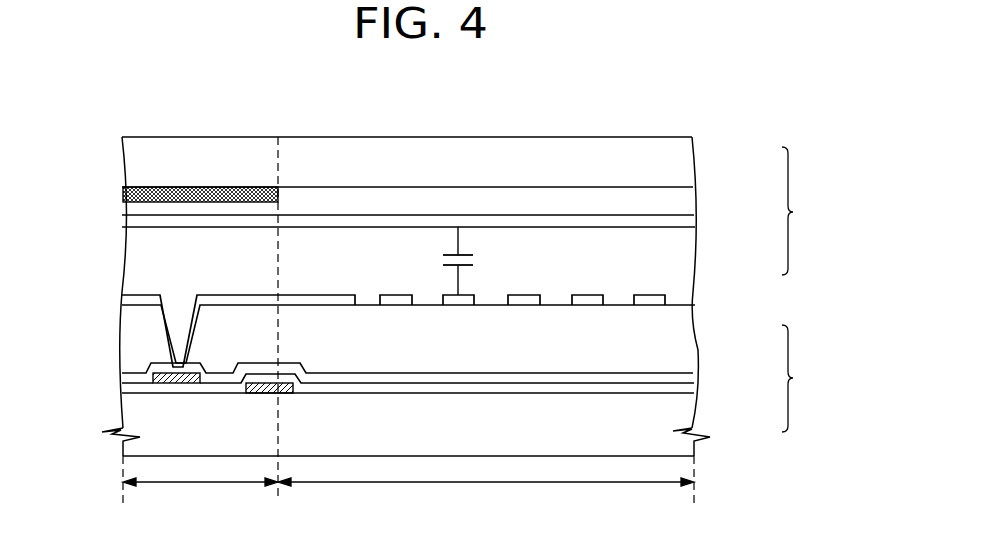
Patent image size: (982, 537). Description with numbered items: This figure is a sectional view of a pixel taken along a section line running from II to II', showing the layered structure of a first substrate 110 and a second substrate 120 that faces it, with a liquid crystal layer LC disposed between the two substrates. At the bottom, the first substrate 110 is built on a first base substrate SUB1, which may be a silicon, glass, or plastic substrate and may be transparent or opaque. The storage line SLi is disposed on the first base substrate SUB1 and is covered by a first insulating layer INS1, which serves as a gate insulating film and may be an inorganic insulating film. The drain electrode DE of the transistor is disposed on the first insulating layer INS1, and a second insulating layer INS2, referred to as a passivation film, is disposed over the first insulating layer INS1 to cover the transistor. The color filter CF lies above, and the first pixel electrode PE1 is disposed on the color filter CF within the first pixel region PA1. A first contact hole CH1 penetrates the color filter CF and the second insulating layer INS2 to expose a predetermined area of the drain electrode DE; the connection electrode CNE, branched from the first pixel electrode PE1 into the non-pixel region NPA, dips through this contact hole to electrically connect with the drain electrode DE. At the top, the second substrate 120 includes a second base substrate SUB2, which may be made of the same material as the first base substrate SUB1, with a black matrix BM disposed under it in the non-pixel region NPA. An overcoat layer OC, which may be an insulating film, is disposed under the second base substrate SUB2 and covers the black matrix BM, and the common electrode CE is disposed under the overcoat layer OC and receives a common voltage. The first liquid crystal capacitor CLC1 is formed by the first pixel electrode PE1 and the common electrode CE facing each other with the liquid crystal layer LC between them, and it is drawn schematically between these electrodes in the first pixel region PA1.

The second base substrate SUB2 is at (683, 153).
The overcoat layer OC is at (683, 198).
The black matrix BM is at (128, 194).
The common electrode CE is at (683, 221).
The liquid crystal layer LC is at (683, 265).
The first liquid crystal capacitor CLC1 is at (483, 261).
The color filter CF is at (683, 333).
The connection electrode CNE is at (238, 295).
The first contact hole CH1 is at (179, 305).
The first pixel electrode PE1 is at (337, 296).
The second insulating layer INS2 is at (683, 378).
The first insulating layer INS1 is at (683, 389).
The drain electrode DE is at (155, 375).
The storage line SLi is at (263, 394).
The first base substrate SUB1 is at (683, 413).
The second substrate 120 is at (808, 211).
The first substrate 110 is at (808, 378).
The non-pixel region NPA is at (200, 495).
The first pixel region PA1 is at (486, 495).
The section line II is at (124, 520).
The section line II' is at (697, 521).